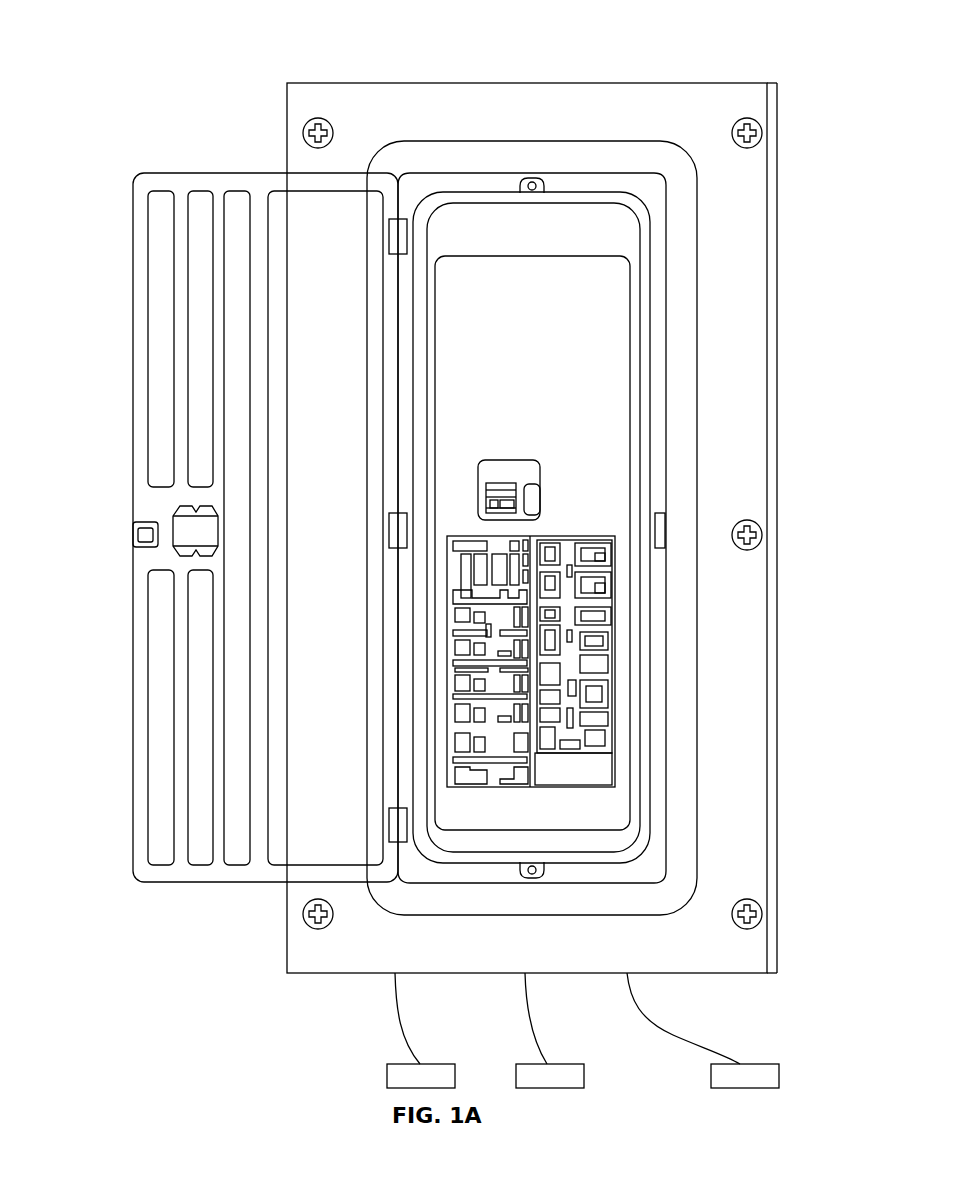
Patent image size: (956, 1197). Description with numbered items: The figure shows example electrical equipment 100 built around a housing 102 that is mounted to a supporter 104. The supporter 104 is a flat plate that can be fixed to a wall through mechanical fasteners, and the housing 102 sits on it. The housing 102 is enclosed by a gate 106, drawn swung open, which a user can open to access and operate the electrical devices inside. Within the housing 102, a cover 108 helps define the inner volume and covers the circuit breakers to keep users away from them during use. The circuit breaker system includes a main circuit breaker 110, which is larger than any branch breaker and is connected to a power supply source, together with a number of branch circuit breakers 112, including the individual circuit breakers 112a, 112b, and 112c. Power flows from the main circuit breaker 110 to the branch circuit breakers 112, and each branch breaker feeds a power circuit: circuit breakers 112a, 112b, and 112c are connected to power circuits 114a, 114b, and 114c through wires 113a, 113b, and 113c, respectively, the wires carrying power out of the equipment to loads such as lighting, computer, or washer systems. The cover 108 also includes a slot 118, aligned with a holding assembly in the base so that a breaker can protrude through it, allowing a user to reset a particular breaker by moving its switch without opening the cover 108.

The electrical equipment 100 is at (126, 50).
The housing 102 is at (612, 236).
The supporter 104 is at (620, 100).
The gate 106 is at (140, 216).
The cover 108 is at (600, 372).
The main circuit breaker 110 is at (540, 473).
The branch circuit breakers 112 is at (612, 672).
The circuit breaker 112a is at (612, 549).
The circuit breaker 112b is at (612, 580).
The circuit breaker 112c is at (612, 620).
The wire 113a is at (403, 1020).
The wire 113b is at (532, 1020).
The wire 113c is at (672, 1033).
The power circuit 114a is at (387, 1078).
The power circuit 114b is at (584, 1078).
The power circuit 114c is at (745, 1088).
The slot 118 is at (600, 770).